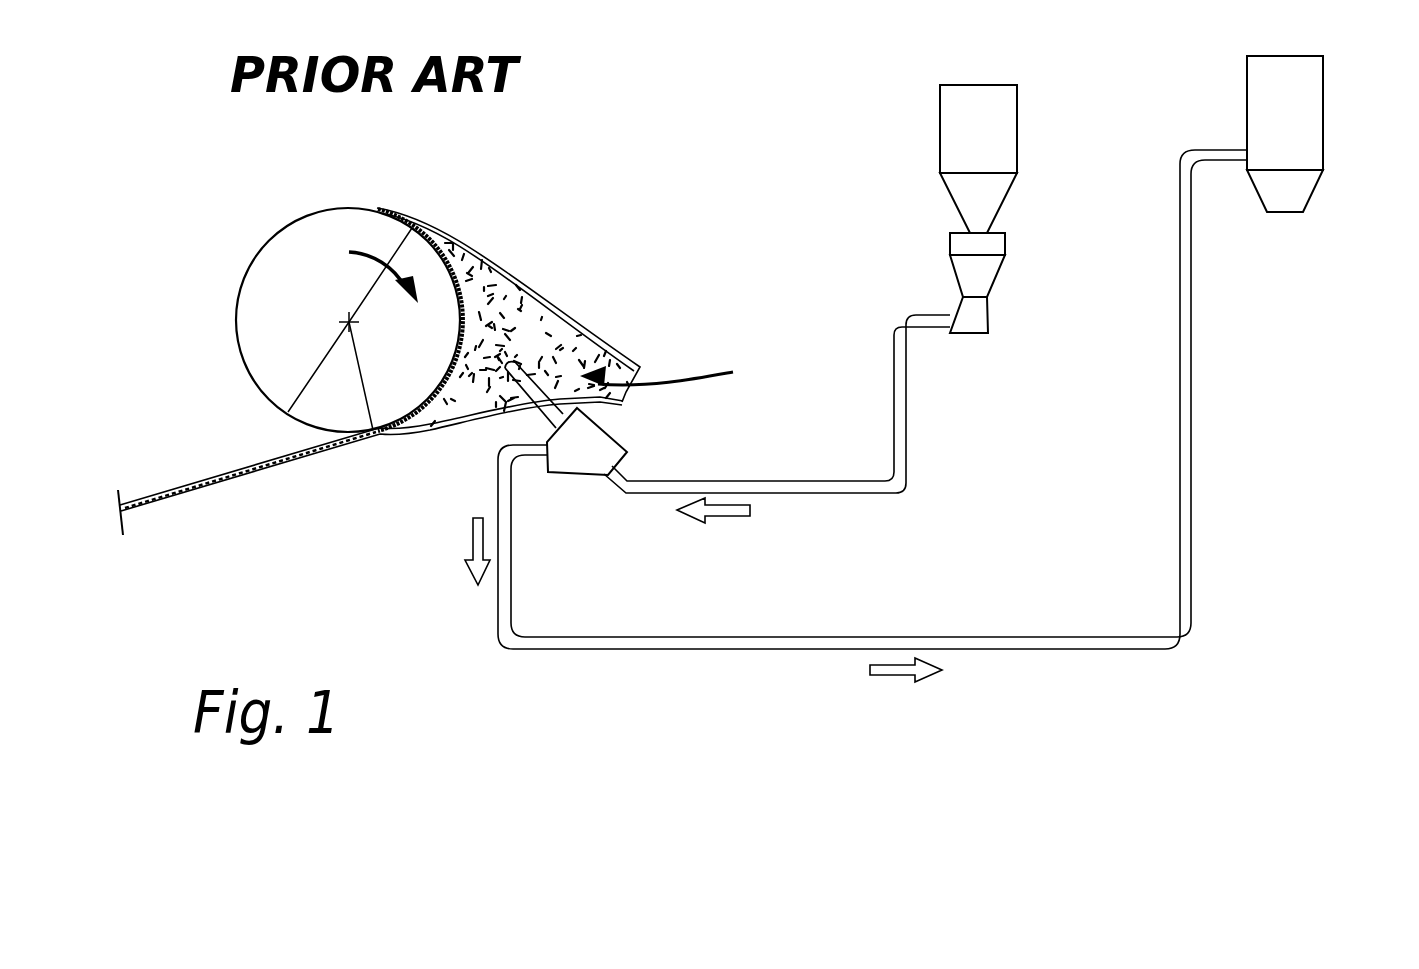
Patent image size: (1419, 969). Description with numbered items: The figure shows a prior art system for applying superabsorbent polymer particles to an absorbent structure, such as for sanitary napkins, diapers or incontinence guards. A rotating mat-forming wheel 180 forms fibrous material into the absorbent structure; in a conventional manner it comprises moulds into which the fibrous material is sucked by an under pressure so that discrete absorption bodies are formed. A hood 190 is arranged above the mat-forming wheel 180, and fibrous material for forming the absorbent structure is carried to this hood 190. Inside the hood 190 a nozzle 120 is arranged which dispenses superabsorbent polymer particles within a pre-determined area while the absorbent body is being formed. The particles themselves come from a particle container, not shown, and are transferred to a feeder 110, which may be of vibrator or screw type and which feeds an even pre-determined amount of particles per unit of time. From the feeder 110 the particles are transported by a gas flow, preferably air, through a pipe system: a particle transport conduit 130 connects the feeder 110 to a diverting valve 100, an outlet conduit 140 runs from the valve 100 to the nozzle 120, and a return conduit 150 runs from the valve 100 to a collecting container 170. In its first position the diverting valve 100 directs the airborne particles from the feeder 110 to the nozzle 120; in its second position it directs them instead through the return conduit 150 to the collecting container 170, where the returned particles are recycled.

The diverting valve 100 is at (575, 445).
The feeder 110 is at (995, 119).
The nozzle 120 is at (508, 350).
The particle transport conduit 130 is at (838, 480).
The outlet conduit 140 is at (540, 415).
The return conduit 150 is at (505, 523).
The collecting container 170 is at (1300, 100).
The mat-forming wheel 180 is at (265, 343).
The hood 190 is at (573, 325).